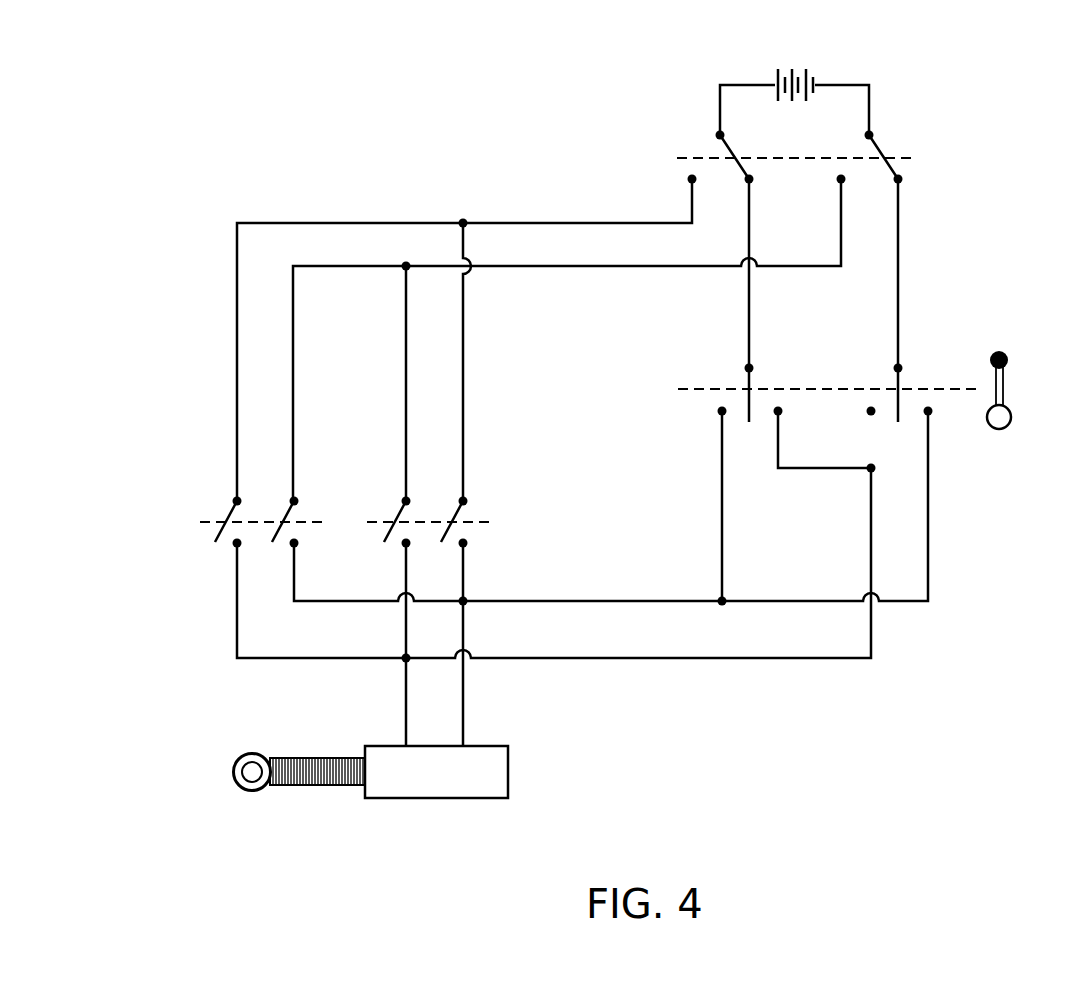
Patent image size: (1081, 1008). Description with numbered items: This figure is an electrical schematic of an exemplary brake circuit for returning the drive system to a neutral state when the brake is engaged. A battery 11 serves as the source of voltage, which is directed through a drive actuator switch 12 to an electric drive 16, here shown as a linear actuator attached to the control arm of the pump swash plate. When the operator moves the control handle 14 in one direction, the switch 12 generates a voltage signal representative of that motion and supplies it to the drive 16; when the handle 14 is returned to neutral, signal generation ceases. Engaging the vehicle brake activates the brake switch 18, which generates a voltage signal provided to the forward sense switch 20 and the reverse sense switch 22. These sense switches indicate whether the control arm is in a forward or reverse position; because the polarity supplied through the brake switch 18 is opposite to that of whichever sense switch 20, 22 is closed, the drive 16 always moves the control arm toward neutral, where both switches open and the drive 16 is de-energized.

The battery 11 is at (777, 83).
The brake switch 18 is at (907, 145).
The drive actuator switch 12 is at (716, 372).
The control handle 14 is at (1003, 383).
The forward sense switch 20 is at (222, 510).
The reverse sense switch 22 is at (486, 507).
The electric drive 16 is at (509, 776).